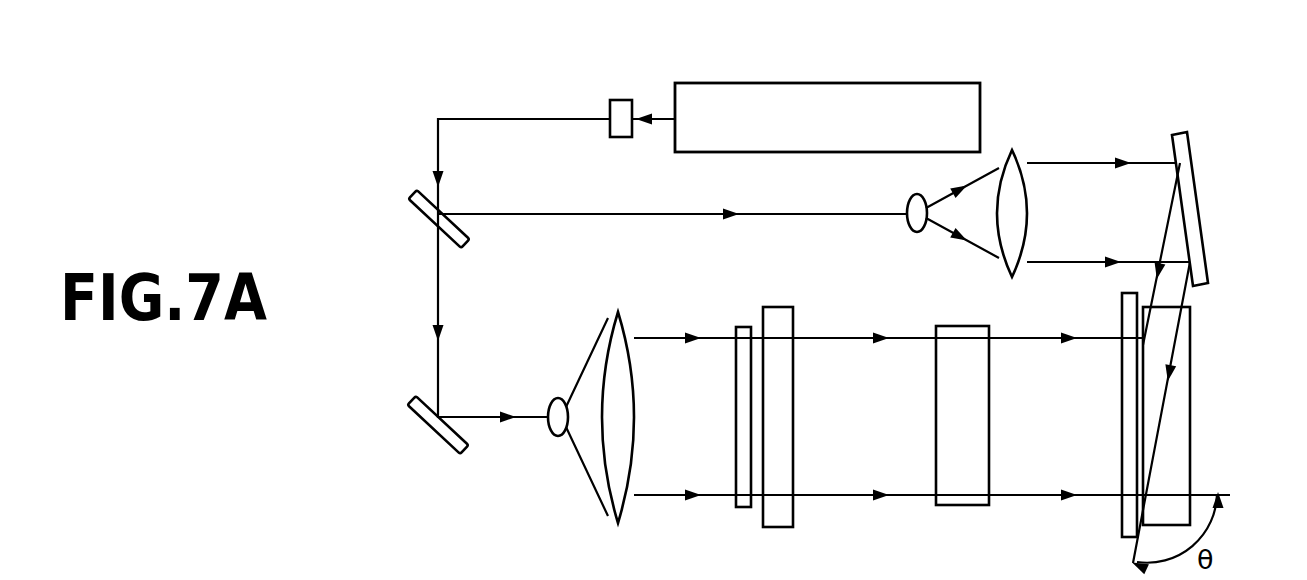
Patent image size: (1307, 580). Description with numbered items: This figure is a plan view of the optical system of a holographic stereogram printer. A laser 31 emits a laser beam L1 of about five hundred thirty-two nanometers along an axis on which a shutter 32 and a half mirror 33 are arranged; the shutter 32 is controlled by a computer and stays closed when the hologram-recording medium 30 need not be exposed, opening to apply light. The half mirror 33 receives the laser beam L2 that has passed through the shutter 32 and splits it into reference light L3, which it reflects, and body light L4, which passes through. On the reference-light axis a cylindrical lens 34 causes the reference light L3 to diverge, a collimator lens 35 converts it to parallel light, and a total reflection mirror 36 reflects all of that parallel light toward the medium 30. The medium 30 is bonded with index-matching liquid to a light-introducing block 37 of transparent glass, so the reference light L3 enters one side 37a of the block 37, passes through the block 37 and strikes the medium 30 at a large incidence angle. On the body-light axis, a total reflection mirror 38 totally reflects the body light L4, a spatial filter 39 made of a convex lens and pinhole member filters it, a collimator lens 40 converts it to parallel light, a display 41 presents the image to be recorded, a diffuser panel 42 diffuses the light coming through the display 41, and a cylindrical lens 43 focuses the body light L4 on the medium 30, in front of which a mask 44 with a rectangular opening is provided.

The hologram-recording medium 30 is at (1127, 298).
The laser 31 is at (732, 152).
The shutter 32 is at (618, 137).
The half mirror 33 is at (414, 210).
The cylindrical lens 34 is at (915, 202).
The collimator lens 35 is at (1015, 152).
The total reflection mirror 36 is at (1183, 150).
The light-introducing block 37 is at (1178, 410).
The one side of the block 37a is at (1168, 305).
The total reflection mirror 38 is at (421, 418).
The spatial filter 39 is at (553, 400).
The collimator lens 40 is at (617, 312).
The display 41 is at (742, 327).
The diffuser panel 42 is at (787, 307).
The cylindrical lens 43 is at (957, 325).
The mask 44 is at (1061, 573).
The laser beam L1 is at (657, 121).
The laser beam L2 is at (440, 142).
The reference light L3 is at (547, 214).
The body light L4 is at (442, 292).